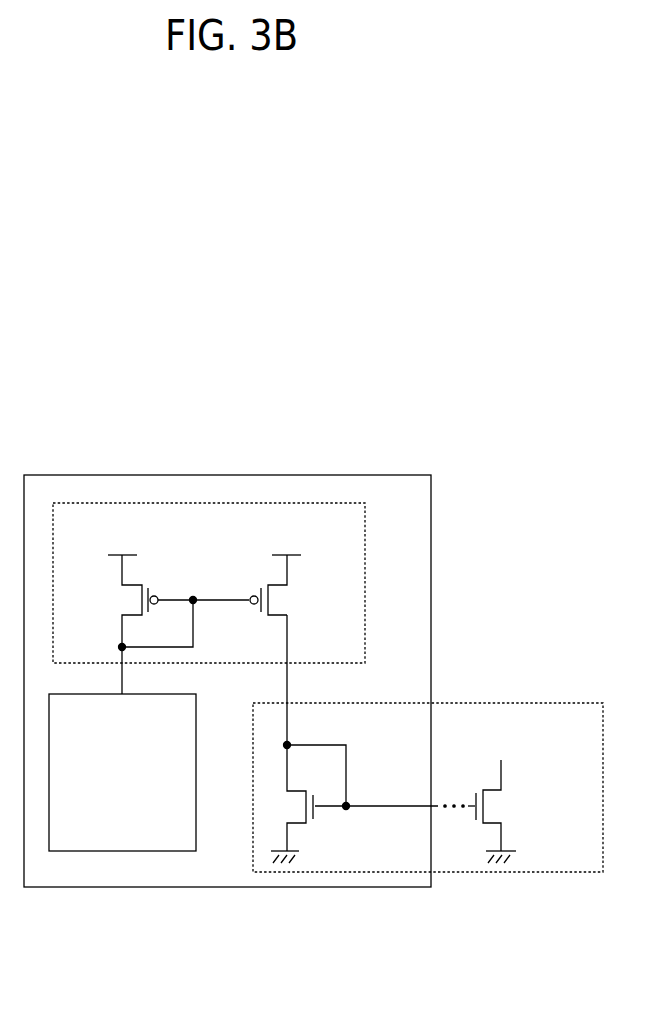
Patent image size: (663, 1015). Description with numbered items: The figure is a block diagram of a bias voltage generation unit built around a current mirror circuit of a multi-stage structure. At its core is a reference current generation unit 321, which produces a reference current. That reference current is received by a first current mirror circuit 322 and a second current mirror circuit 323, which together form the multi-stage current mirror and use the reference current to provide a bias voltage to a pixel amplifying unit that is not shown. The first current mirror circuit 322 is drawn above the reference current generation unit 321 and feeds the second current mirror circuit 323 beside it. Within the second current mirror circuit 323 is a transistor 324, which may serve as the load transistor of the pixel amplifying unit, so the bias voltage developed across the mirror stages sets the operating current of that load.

The reference current generation unit 321 is at (155, 694).
The first current mirror circuit 322 is at (325, 504).
The second current mirror circuit 323 is at (537, 703).
The transistor 324 is at (476, 795).